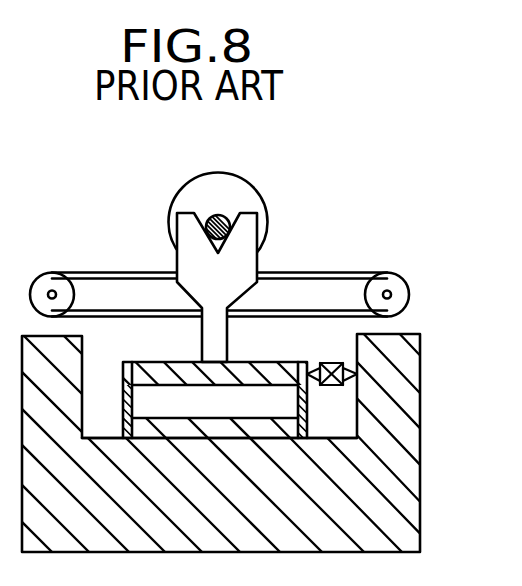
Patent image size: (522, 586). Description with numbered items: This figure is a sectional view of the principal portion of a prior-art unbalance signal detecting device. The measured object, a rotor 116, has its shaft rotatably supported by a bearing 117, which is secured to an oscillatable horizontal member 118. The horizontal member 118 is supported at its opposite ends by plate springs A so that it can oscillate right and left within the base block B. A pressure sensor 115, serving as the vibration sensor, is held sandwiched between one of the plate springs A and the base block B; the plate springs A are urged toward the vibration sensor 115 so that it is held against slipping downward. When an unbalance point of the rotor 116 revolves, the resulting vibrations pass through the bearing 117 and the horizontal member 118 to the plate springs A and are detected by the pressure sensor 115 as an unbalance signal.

The pressure sensor 115 is at (331, 386).
The rotor 116 is at (263, 207).
The bearing 117 is at (240, 270).
The horizontal member 118 is at (232, 361).
The plate springs A is at (123, 410).
The base block B is at (422, 403).